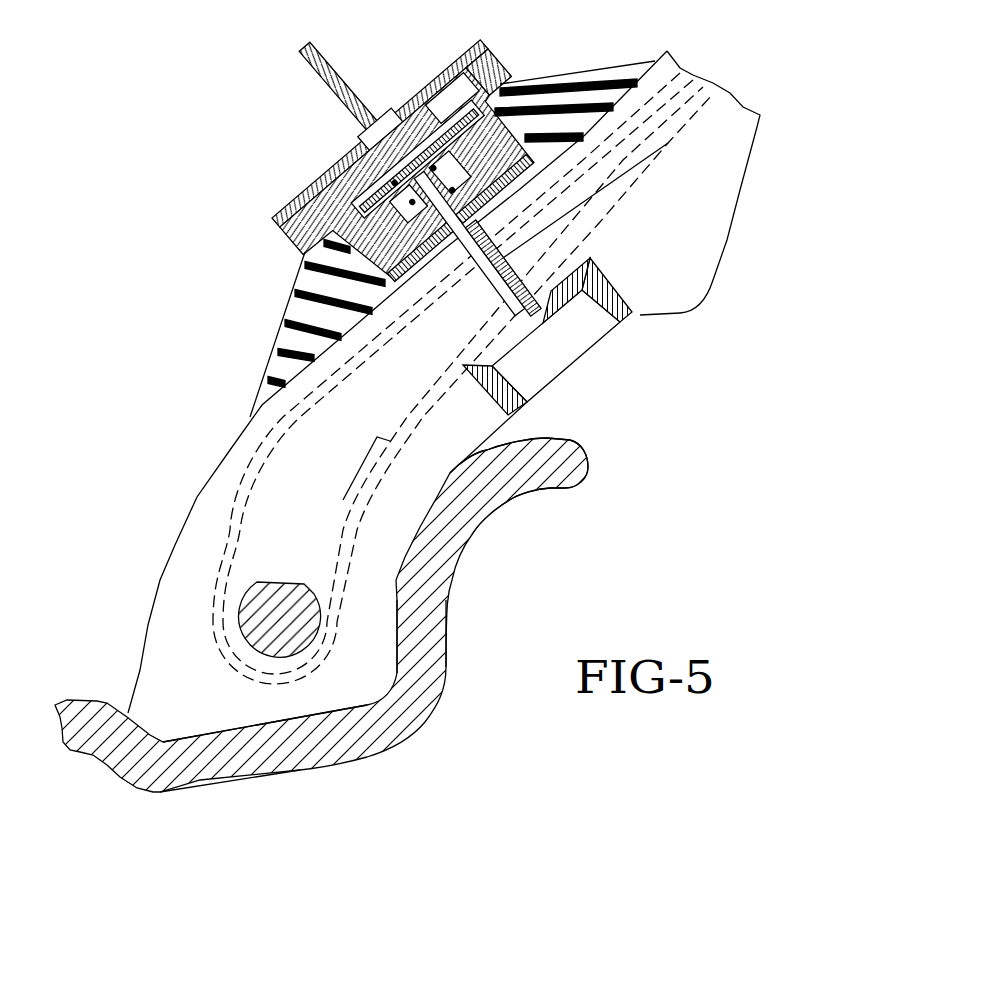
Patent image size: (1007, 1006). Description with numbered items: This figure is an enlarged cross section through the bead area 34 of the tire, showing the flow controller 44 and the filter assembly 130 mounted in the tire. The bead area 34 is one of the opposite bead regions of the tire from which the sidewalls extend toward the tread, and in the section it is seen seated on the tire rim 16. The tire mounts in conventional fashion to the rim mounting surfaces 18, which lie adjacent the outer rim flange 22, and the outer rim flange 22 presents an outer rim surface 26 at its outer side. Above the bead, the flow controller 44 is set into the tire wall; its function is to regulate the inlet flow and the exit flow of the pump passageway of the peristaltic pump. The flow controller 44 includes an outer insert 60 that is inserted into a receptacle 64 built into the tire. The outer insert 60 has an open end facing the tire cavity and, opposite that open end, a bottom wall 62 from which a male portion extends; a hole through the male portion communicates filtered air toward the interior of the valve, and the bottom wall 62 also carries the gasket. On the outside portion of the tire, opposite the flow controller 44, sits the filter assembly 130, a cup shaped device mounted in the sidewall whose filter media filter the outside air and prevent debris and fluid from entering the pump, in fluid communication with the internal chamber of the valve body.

The tire rim 16 is at (103, 760).
The rim mounting surfaces 18 is at (337, 715).
The outer rim flange 22 is at (397, 570).
The outer rim surface 26 is at (578, 445).
The bead area 34 is at (262, 607).
The flow controller 44 is at (262, 193).
The outer insert 60 is at (517, 133).
The bottom wall 62 is at (413, 273).
The receptacle 64 is at (582, 92).
The filter assembly 130 is at (622, 322).